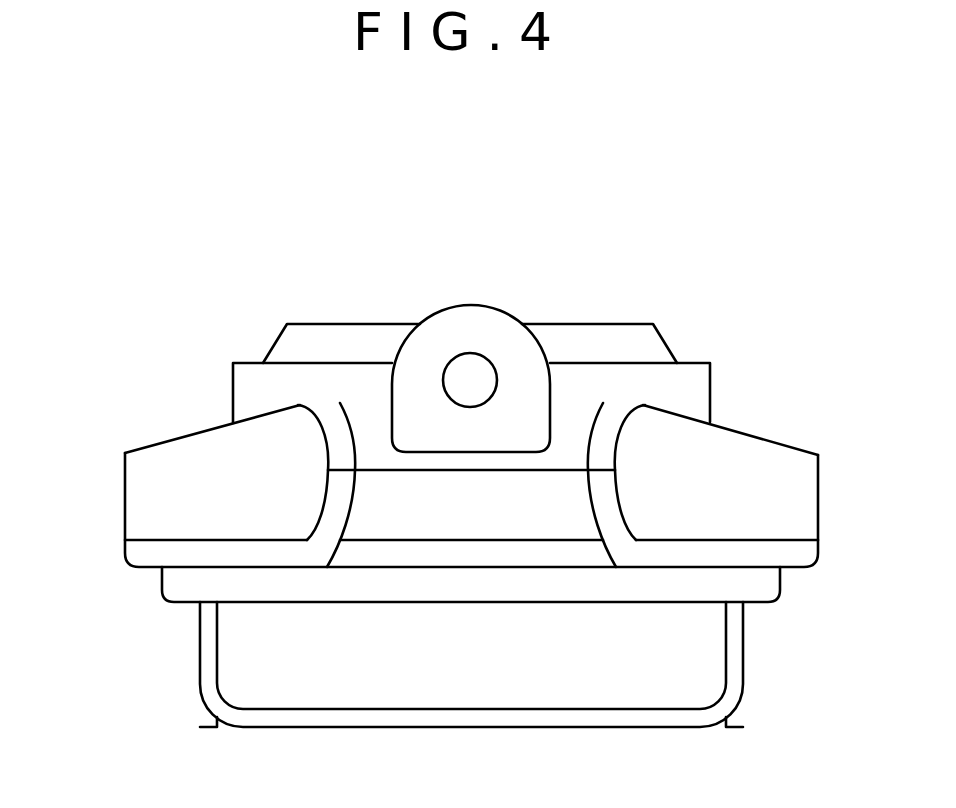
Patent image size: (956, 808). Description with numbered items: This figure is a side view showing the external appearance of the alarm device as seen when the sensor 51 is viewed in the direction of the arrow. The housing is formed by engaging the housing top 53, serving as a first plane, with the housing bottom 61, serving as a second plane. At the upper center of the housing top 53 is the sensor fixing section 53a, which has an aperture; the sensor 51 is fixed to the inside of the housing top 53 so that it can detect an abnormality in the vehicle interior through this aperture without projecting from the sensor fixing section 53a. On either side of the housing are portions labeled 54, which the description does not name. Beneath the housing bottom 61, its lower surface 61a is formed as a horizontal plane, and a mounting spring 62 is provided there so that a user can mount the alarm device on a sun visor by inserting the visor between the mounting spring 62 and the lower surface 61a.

The sensor 51 is at (457, 367).
The housing top 53 is at (578, 397).
The sensor fixing section 53a is at (473, 307).
The side wing 54 is at (137, 497).
The housing bottom 61 is at (552, 518).
The lower surface 61a is at (368, 605).
The mounting spring 62 is at (477, 730).